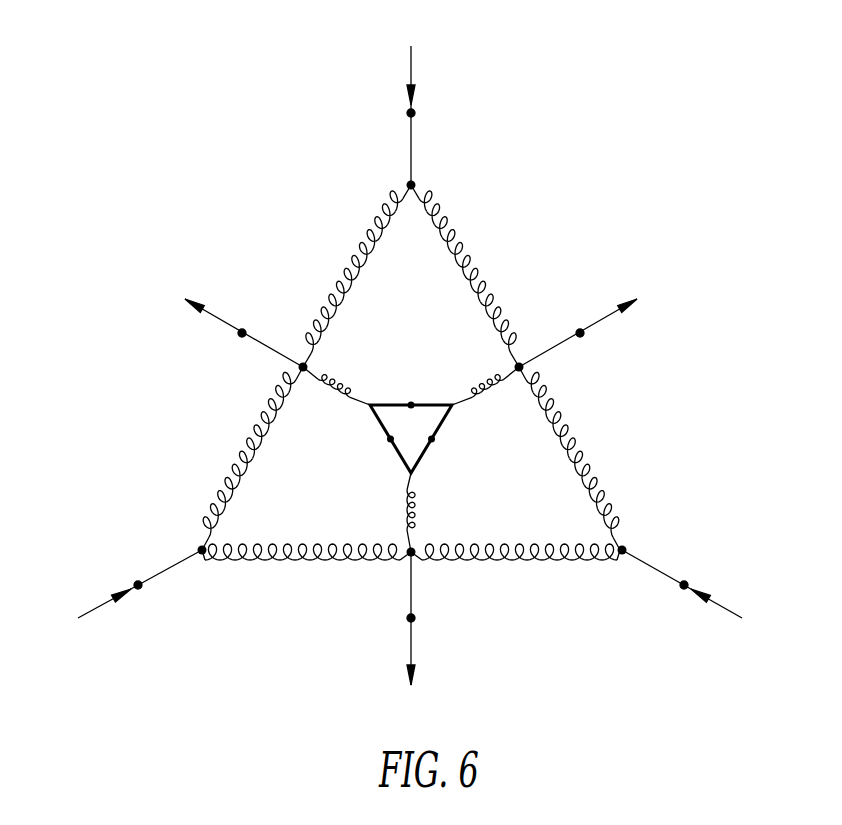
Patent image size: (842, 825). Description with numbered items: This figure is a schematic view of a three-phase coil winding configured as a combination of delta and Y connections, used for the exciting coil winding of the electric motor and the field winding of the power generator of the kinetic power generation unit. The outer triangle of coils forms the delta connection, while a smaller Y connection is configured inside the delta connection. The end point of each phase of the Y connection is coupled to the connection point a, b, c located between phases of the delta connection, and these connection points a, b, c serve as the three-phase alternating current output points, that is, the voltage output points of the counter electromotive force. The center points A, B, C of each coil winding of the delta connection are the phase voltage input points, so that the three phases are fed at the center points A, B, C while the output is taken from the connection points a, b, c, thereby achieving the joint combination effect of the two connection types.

The center point of the delta connection coil winding A is at (128, 595).
The center point of the delta connection coil winding B is at (410, 101).
The center point of the delta connection coil winding C is at (693, 596).
The connection point between phases of the delta connection a is at (234, 324).
The connection point between phases of the delta connection b is at (588, 324).
The connection point between phases of the delta connection c is at (411, 636).